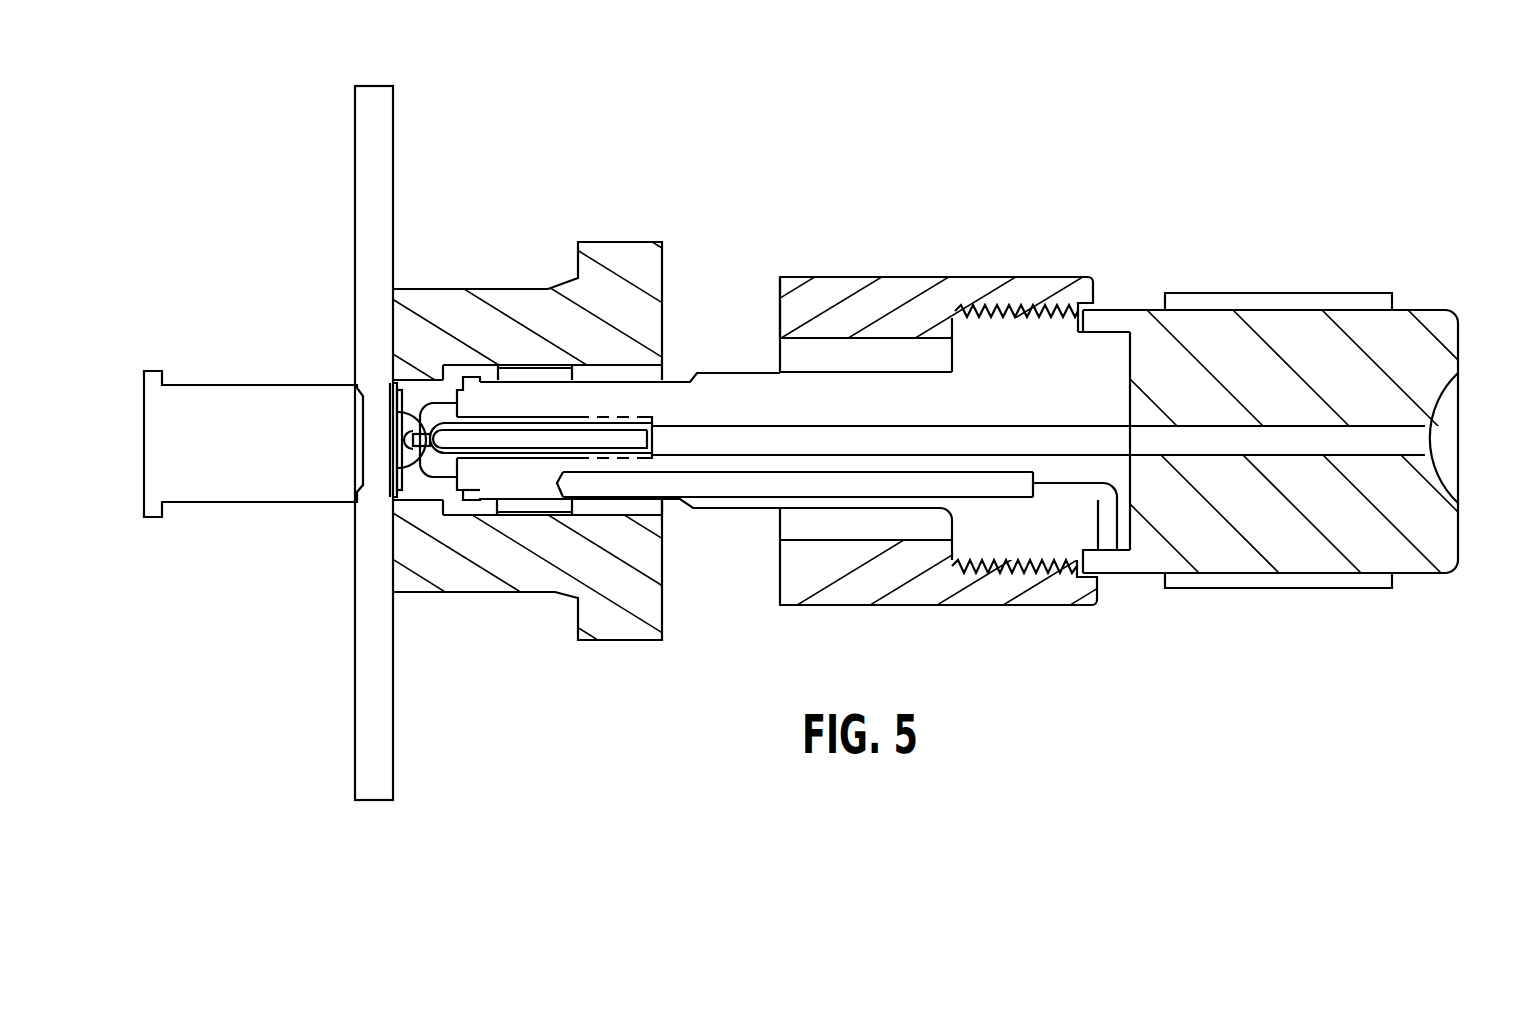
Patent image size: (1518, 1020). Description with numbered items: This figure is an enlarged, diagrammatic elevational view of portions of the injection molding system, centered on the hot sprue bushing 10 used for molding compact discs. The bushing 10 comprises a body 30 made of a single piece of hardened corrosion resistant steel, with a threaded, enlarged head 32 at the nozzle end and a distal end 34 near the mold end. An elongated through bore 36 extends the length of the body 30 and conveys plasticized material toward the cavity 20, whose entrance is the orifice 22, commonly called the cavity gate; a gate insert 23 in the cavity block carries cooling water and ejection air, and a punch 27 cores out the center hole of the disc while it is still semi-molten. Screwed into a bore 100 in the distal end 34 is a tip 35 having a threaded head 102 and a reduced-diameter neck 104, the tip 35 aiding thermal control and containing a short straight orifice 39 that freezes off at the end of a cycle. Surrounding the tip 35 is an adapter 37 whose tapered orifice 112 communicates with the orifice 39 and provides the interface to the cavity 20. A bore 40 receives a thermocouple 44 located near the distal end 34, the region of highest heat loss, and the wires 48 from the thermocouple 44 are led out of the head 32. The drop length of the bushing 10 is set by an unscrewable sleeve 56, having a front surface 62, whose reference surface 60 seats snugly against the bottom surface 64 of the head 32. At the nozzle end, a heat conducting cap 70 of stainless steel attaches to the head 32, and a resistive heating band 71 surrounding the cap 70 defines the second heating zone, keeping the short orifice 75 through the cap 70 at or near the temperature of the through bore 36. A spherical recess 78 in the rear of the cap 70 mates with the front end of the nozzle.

The hot sprue bushing 10 is at (1058, 152).
The cavity 20 is at (384, 119).
The orifice 22 is at (408, 438).
The gate insert 23 is at (612, 255).
The punch 27 is at (228, 385).
The body 30 is at (729, 345).
The head 32 is at (1033, 335).
The distal end 34 is at (477, 492).
The tip 35 is at (447, 457).
The through bore 36 is at (726, 437).
The adapter 37 is at (423, 396).
The orifice 39 is at (402, 412).
The bore 40 is at (677, 497).
The thermocouple 44 is at (700, 480).
The thermocouple wires 48 is at (1117, 552).
The sleeve 56 is at (876, 293).
The reference surface 60 is at (953, 325).
The front surface 62 is at (786, 302).
The bottom surface 64 is at (950, 345).
The heat conducting cap 70 is at (1445, 325).
The resistive heating band 71 is at (1283, 300).
The orifice 75 is at (1408, 440).
The spherical recess 78 is at (1447, 400).
The bore 100 is at (507, 456).
The threaded head 102 is at (617, 420).
The neck 104 is at (507, 426).
The tapered orifice 112 is at (397, 466).